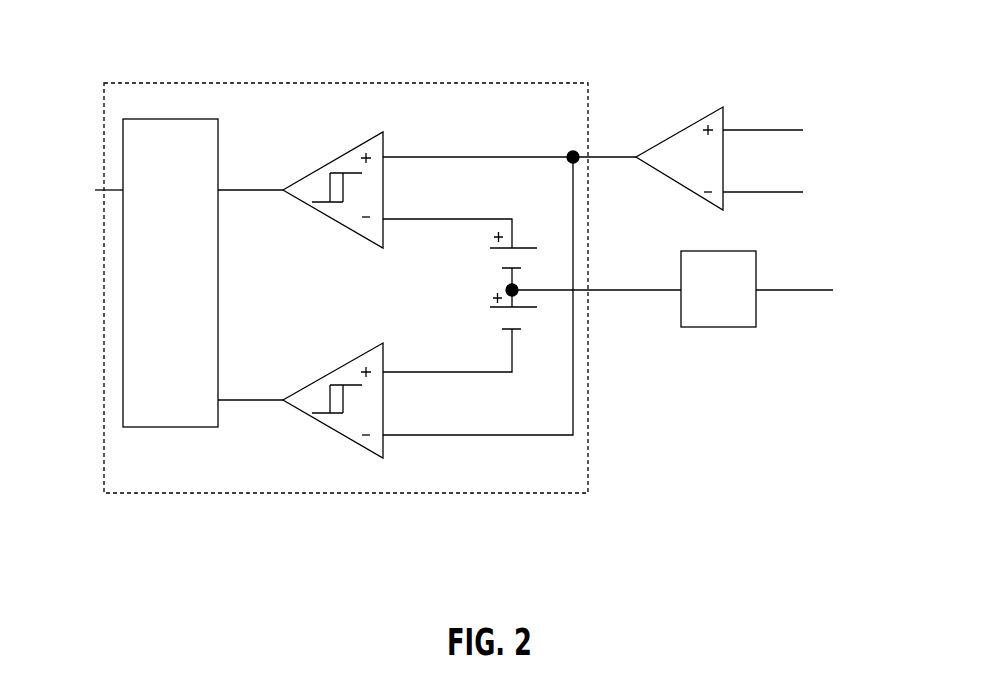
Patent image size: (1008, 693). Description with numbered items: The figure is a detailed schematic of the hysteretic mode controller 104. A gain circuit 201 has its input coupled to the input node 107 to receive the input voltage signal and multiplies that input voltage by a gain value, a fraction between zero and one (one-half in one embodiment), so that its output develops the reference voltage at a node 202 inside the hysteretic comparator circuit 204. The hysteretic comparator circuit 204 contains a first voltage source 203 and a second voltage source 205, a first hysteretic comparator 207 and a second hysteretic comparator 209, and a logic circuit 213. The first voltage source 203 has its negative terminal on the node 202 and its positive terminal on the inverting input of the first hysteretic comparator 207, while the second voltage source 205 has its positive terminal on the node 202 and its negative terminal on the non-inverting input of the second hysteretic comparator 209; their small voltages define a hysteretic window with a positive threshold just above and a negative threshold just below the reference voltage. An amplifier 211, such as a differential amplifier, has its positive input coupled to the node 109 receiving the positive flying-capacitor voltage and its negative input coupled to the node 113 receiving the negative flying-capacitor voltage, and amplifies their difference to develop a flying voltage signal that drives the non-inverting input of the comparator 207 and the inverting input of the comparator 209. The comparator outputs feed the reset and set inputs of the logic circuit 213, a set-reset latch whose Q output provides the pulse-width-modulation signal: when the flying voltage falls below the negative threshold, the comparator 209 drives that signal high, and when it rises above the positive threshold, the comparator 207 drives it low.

The hysteretic mode controller 104 is at (459, 292).
The input node 107 is at (805, 290).
The node 109 is at (778, 130).
The node 113 is at (765, 192).
The gain circuit 201 is at (725, 327).
The node 202 is at (506, 287).
The first voltage source 203 is at (525, 247).
The hysteretic comparator circuit 204 is at (507, 83).
The second voltage source 205 is at (532, 308).
The first hysteretic comparator 207 is at (345, 228).
The second hysteretic comparator 209 is at (348, 363).
The amplifier 211 is at (688, 170).
The logic circuit 213 is at (185, 287).